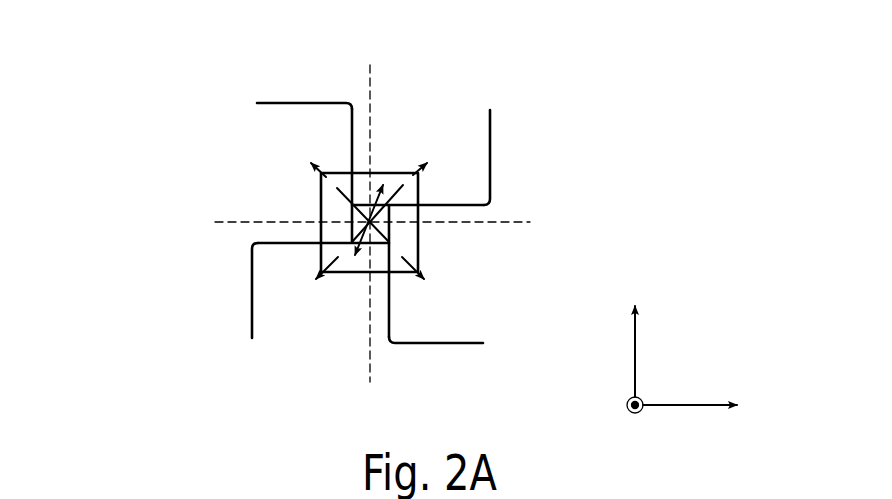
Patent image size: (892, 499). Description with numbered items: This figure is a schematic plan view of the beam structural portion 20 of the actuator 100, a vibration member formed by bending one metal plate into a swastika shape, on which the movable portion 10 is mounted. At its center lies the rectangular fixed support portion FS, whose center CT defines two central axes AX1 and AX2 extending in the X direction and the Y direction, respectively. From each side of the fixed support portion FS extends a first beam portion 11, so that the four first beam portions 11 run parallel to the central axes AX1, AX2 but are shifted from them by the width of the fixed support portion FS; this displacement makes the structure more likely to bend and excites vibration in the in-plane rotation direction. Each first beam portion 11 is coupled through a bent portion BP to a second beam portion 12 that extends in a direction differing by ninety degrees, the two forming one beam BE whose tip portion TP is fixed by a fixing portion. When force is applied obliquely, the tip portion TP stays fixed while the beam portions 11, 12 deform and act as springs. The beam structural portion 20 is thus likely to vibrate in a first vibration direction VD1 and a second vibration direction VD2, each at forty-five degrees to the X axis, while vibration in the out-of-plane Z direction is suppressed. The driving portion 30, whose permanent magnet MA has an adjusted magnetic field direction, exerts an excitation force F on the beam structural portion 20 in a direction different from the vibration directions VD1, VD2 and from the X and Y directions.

The movable portion 10 is at (418, 197).
The first beam portion 11 is at (381, 223).
The second beam portion 12 is at (370, 188).
The beam structural portion 20 is at (415, 108).
The driving portion 30 is at (329, 209).
The actuator 100 is at (483, 97).
The beam BE is at (235, 85).
The tip portion TP is at (257, 100).
The bent portion BP is at (352, 100).
The central axis AX1 is at (217, 220).
The central axis AX2 is at (372, 365).
The permanent magnet MA is at (343, 197).
The excitation force F is at (353, 262).
The first vibration direction VD1 is at (408, 173).
The second vibration direction VD2 is at (307, 163).
The fixed support portion FS is at (363, 200).
The center CT is at (468, 206).
The X direction X is at (692, 420).
The Y direction Y is at (643, 341).
The Z direction Z is at (625, 415).